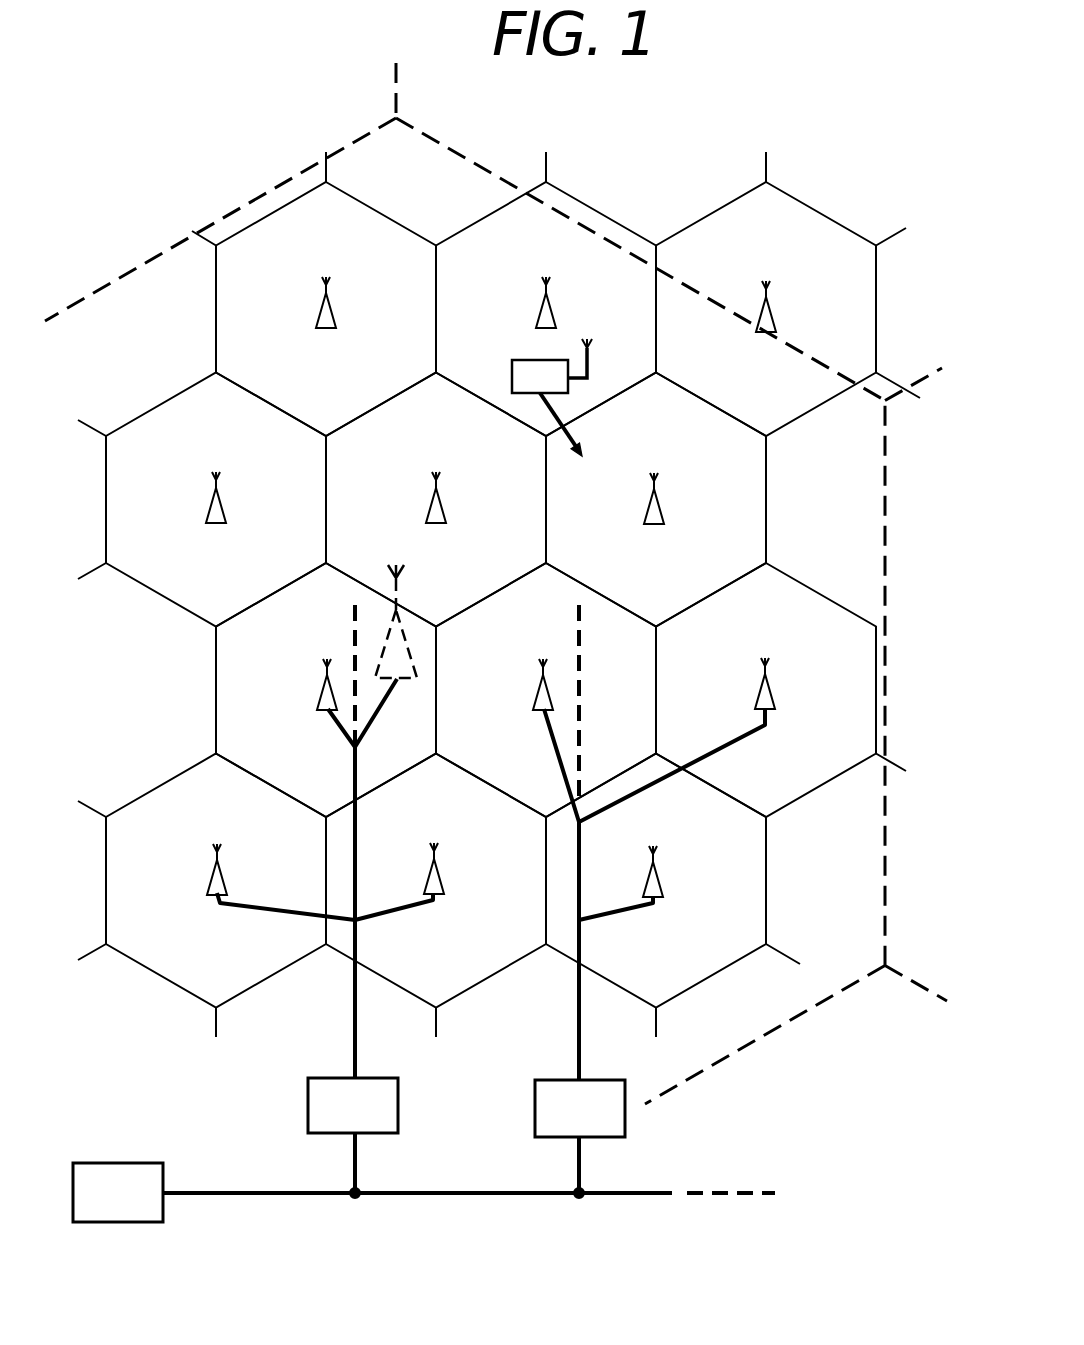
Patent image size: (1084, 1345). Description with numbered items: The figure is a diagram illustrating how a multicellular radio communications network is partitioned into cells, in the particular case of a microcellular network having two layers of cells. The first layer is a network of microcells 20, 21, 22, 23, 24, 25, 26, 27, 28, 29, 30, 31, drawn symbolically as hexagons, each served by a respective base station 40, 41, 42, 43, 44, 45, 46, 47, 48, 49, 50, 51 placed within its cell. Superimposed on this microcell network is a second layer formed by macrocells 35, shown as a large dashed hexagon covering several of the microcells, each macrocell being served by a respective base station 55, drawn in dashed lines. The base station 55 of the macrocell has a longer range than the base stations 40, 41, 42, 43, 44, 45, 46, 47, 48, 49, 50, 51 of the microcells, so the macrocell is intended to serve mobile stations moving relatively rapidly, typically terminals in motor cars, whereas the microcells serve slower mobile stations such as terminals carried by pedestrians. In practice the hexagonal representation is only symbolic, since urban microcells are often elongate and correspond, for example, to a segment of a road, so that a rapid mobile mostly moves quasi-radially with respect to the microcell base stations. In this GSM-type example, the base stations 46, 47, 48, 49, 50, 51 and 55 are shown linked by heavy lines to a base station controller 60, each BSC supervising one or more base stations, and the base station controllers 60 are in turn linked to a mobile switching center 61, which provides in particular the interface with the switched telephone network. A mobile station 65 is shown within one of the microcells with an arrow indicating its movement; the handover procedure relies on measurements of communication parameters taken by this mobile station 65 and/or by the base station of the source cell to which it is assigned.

The microcell 20 is at (326, 309).
The microcell 21 is at (546, 309).
The microcell 22 is at (766, 309).
The microcell 23 is at (216, 500).
The microcell 24 is at (436, 500).
The microcell 25 is at (656, 500).
The microcell 26 is at (326, 690).
The microcell 27 is at (546, 690).
The microcell 28 is at (766, 690).
The microcell 29 is at (216, 881).
The microcell 30 is at (436, 881).
The microcell 31 is at (656, 881).
The macrocell 35 is at (496, 583).
The base station 40 is at (317, 315).
The base station 41 is at (537, 315).
The base station 42 is at (776, 315).
The base station 43 is at (207, 505).
The base station 44 is at (427, 505).
The base station 45 is at (645, 505).
The base station 46 is at (317, 690).
The base station 47 is at (534, 692).
The base station 48 is at (756, 694).
The base station 49 is at (207, 882).
The base station 50 is at (425, 880).
The base station 51 is at (664, 885).
The base station 55 is at (403, 623).
The base station controller 60 is at (318, 1107).
The mobile switching center 61 is at (115, 1222).
The mobile station 65 is at (511, 377).